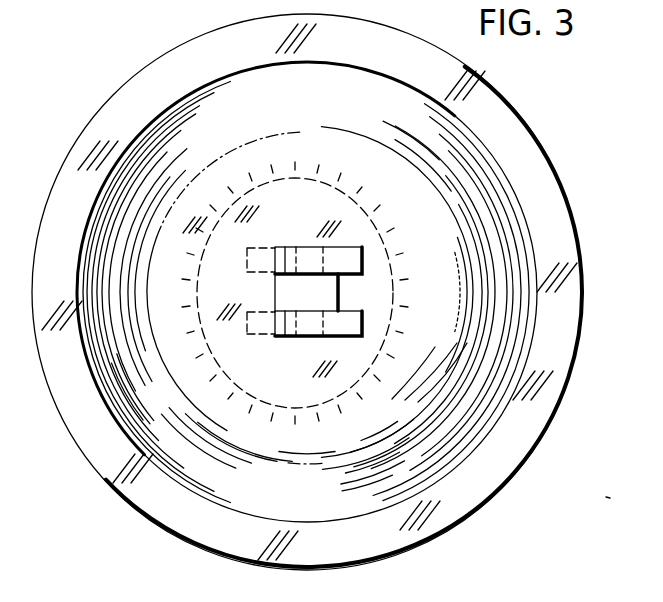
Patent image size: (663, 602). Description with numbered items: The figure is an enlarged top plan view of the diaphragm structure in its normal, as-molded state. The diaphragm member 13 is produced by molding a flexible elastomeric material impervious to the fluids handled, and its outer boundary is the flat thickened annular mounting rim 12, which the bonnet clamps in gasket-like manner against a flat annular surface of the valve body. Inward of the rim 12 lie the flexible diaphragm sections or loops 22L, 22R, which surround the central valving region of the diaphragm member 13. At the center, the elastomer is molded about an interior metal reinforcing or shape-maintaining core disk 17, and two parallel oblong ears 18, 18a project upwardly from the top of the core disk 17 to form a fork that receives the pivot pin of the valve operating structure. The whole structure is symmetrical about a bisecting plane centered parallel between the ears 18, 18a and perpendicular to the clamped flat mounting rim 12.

The flat thickened annular mounting rim portion 12 is at (560, 250).
The diaphragm member 13 is at (510, 208).
The core disk 17 is at (328, 207).
The ear 18 is at (352, 263).
The ear 18a is at (357, 322).
The diaphragm section or loop 22L is at (150, 272).
The diaphragm section or loop 22R is at (423, 410).